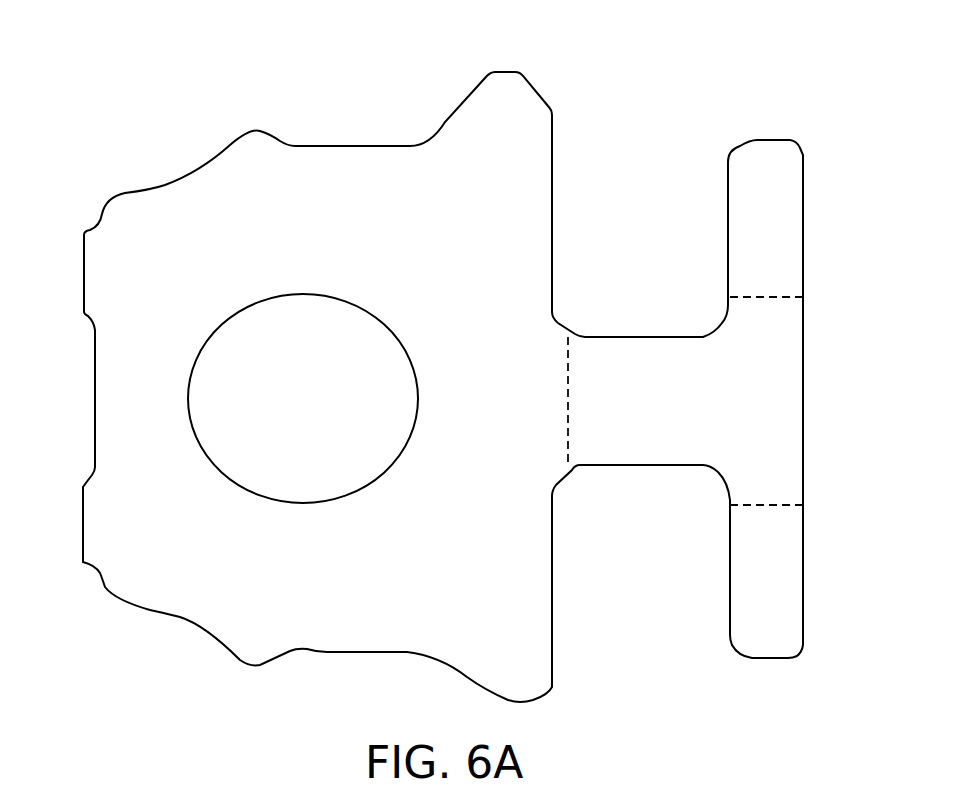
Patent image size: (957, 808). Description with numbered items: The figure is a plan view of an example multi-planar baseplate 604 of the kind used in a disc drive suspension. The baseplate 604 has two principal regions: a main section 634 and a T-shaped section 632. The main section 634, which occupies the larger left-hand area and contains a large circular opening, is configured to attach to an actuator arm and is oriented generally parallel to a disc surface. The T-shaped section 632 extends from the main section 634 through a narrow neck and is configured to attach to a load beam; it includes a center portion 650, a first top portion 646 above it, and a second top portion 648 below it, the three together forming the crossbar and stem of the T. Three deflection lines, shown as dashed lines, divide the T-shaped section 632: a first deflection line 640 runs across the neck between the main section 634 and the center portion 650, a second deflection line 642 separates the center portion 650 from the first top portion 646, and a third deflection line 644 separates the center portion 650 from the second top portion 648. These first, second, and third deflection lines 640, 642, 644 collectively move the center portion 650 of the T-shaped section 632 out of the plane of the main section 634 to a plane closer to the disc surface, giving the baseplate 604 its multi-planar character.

The multi-planar baseplate 604 is at (140, 84).
The main section 634 is at (410, 224).
The T-shaped section 632 is at (680, 292).
The first deflection line 640 is at (568, 437).
The second deflection line 642 is at (770, 297).
The third deflection line 644 is at (767, 505).
The first top portion 646 is at (787, 224).
The center portion 650 is at (777, 416).
The second top portion 648 is at (785, 587).